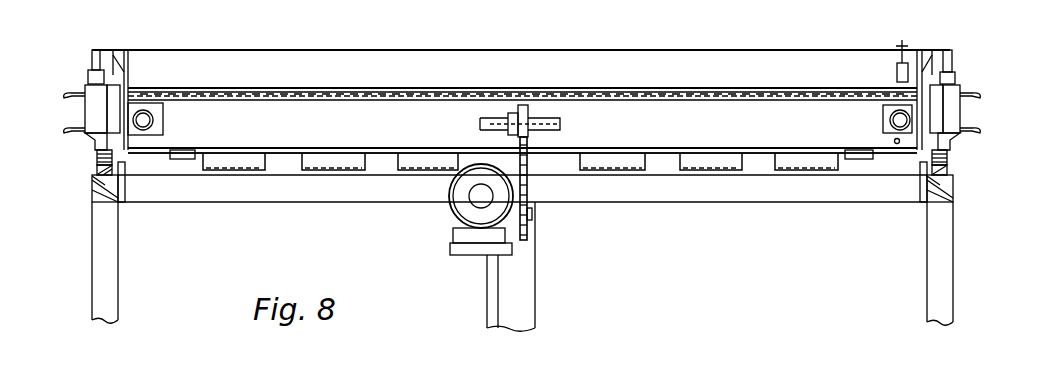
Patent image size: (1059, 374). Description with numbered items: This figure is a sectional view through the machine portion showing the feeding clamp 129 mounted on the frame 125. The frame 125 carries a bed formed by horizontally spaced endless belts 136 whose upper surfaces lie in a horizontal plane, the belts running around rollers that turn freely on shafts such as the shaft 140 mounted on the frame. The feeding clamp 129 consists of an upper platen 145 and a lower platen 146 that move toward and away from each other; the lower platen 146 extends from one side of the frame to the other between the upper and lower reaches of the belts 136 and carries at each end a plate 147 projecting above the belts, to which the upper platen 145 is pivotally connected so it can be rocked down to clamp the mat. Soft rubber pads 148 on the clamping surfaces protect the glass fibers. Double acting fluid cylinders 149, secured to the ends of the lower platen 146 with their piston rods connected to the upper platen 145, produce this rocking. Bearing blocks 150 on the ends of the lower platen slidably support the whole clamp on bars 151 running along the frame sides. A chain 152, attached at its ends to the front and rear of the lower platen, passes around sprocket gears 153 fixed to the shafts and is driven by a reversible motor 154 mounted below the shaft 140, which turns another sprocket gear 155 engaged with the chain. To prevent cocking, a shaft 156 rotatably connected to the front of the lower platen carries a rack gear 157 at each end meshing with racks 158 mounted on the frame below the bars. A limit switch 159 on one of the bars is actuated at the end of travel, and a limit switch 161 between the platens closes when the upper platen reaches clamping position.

The frame 125 is at (365, 208).
The feeding clamp 129 is at (367, 37).
The endless belts 136 is at (233, 95).
The shaft 140 is at (548, 120).
The upper platen 145 is at (395, 60).
The lower platen 146 is at (650, 143).
The plate 147 is at (120, 97).
The soft rubber pads 148 is at (413, 100).
The double acting fluid cylinders 149 is at (88, 112).
The bearing blocks 150 is at (163, 118).
The bars 151 is at (152, 135).
The chain 152 is at (524, 105).
The sprocket gears 153 is at (508, 113).
The reversible motor 154 is at (450, 208).
The sprocket gear 155 is at (530, 240).
The shaft 156 is at (712, 153).
The rack gear 157 is at (95, 158).
The racks 158 is at (97, 172).
The limit switch 159 is at (905, 145).
The limit switch 161 is at (892, 68).